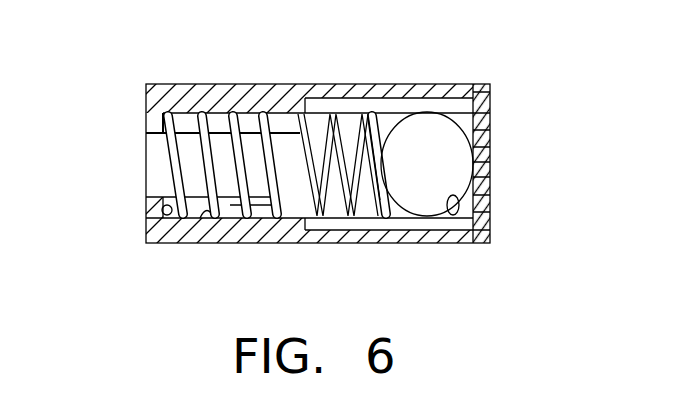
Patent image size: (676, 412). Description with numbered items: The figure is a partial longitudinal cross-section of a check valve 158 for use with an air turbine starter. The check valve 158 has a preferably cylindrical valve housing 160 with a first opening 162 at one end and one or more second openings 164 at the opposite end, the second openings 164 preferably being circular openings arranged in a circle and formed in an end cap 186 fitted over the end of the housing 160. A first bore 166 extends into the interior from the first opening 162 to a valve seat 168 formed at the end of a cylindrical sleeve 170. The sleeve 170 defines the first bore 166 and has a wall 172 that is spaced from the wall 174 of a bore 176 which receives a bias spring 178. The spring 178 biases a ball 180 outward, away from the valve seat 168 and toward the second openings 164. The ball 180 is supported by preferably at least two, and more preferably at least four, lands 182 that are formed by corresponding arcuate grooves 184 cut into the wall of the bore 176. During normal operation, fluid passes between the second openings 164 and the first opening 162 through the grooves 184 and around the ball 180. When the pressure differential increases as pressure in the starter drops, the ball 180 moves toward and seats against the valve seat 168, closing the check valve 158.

The check valve 158 is at (140, 60).
The valve housing 160 is at (267, 84).
The first opening 162 is at (135, 188).
The second openings 164 is at (508, 122).
The first bore 166 is at (165, 134).
The valve seat 168 is at (298, 113).
The cylindrical sleeve 170 is at (225, 230).
The sleeve wall 172 is at (273, 206).
The bore wall 174 is at (180, 243).
The bore 176 is at (190, 117).
The bias spring 178 is at (350, 203).
The ball 180 is at (443, 176).
The lands 182 is at (458, 247).
The arcuate grooves 184 is at (413, 223).
The end cap 186 is at (453, 84).